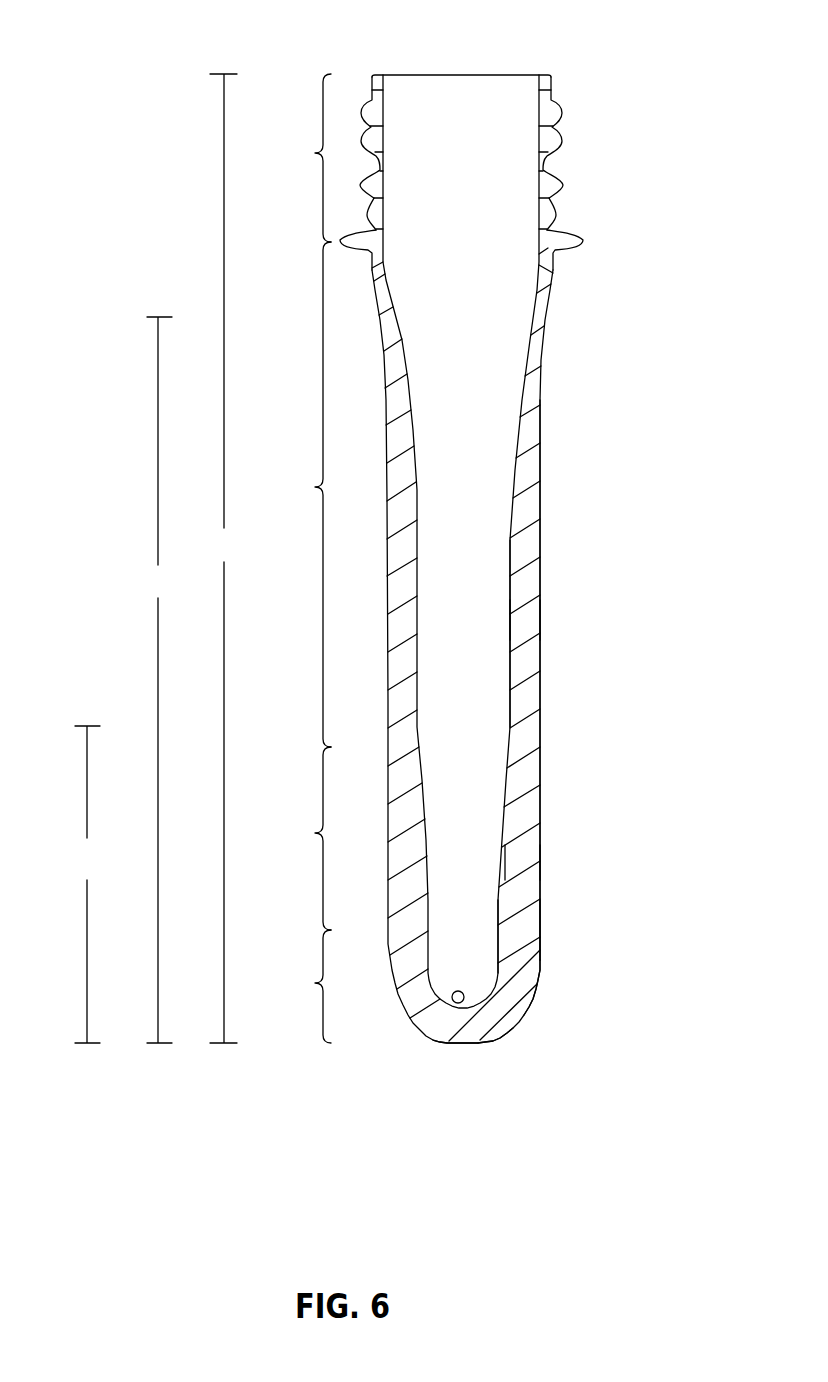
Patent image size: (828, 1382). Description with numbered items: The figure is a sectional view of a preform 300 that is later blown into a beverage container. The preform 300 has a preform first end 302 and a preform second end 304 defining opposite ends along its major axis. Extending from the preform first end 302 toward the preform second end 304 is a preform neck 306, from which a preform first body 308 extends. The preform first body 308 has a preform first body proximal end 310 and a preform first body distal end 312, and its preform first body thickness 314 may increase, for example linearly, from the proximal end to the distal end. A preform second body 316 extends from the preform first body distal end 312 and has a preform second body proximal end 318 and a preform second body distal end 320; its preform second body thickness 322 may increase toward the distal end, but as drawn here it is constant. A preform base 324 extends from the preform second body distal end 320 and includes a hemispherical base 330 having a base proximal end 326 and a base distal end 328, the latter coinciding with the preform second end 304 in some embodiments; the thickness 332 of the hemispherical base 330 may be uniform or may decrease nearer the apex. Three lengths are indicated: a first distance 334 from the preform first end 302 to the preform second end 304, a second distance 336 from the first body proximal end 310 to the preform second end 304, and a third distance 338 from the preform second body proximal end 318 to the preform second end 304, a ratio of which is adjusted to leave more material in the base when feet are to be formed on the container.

The preform 300 is at (632, 108).
The preform first end 302 is at (453, 74).
The preform second end 304 is at (460, 1044).
The preform neck 306 is at (415, 158).
The preform first body 308 is at (409, 494).
The preform first body proximal end 310 is at (556, 250).
The preform first body distal end 312 is at (540, 795).
The preform first body thickness 314 is at (463, 620).
The preform second body 316 is at (404, 838).
The preform second body proximal end 318 is at (540, 795).
The preform second body distal end 320 is at (540, 927).
The preform second body thickness 322 is at (470, 863).
The preform base 324 is at (404, 986).
The base proximal end 326 is at (540, 927).
The base distal end 328 is at (475, 1043).
The hemispherical base 330 is at (455, 1002).
The thickness of hemispherical base 332 is at (522, 1013).
The first distance 334 is at (224, 558).
The second distance 336 is at (152, 680).
The third distance 338 is at (81, 884).